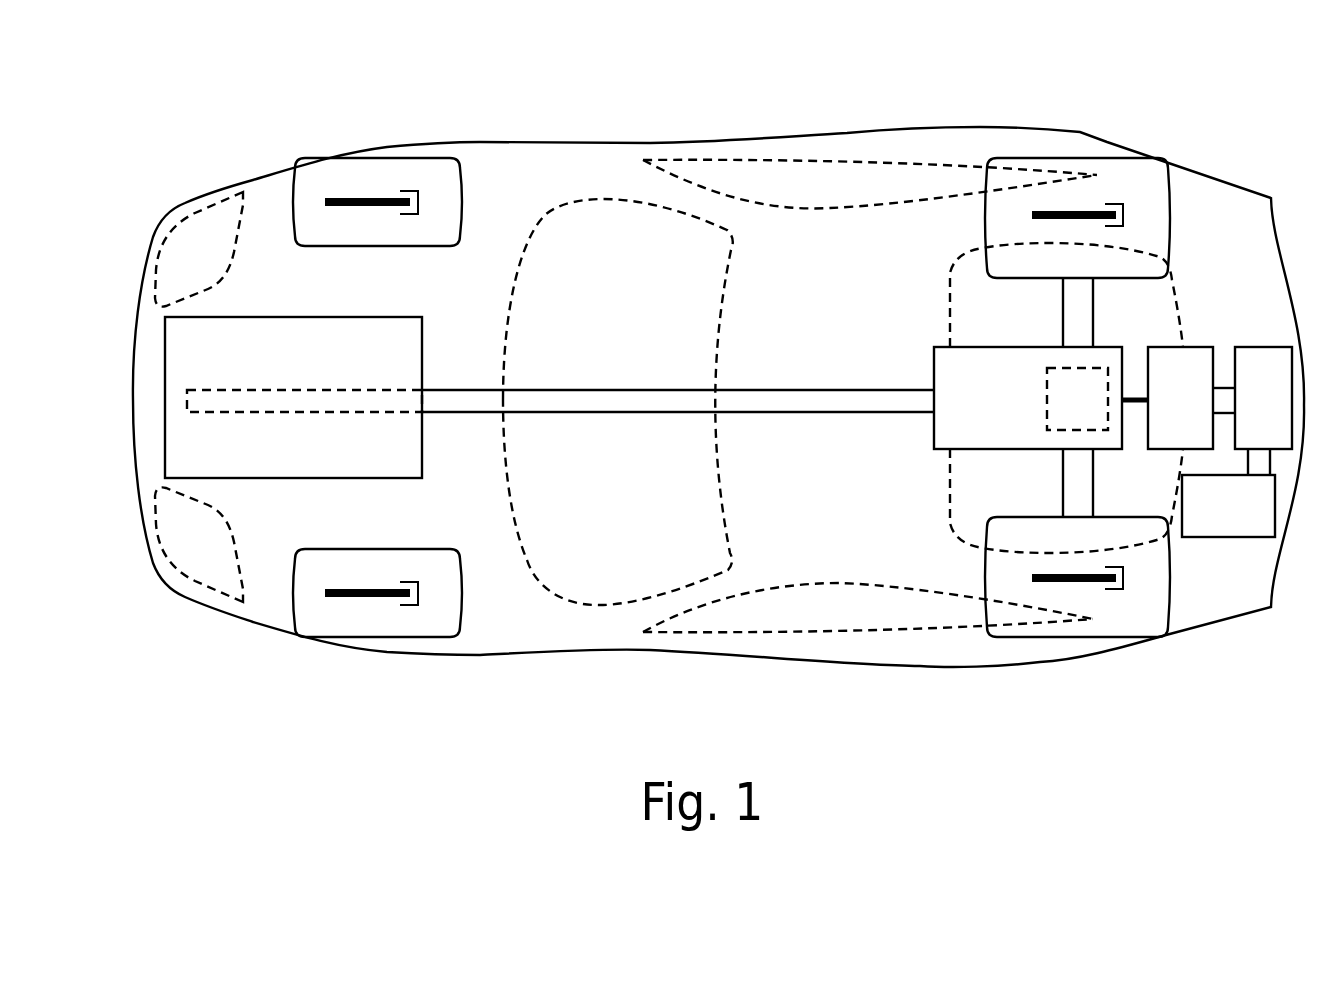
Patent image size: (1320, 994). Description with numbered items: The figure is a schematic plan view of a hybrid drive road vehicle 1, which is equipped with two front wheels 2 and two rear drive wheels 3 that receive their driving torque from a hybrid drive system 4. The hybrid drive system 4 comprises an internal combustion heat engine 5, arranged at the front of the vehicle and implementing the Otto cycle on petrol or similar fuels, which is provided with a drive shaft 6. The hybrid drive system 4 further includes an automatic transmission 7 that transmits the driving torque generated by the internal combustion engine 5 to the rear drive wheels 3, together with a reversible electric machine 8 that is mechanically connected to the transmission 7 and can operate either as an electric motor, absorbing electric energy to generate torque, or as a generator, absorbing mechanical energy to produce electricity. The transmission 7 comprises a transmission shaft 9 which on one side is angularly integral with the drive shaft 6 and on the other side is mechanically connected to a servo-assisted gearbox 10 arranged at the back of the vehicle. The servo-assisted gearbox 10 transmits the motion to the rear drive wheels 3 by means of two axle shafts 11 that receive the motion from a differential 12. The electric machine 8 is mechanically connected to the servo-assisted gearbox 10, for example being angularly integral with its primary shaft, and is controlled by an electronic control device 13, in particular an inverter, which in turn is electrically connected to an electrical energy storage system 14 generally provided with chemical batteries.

The hybrid drive road vehicle 1 is at (702, 436).
The front wheels 2 is at (315, 178).
The rear drive wheels 3 is at (1153, 175).
The hybrid drive system 4 is at (214, 169).
The internal combustion heat engine 5 is at (173, 343).
The drive shaft 6 is at (280, 398).
The automatic transmission 7 is at (747, 124).
The electric machine 8 is at (1167, 398).
The transmission shaft 9 is at (766, 403).
The servo-assisted gearbox 10 is at (1028, 398).
The axle shafts 11 is at (1075, 303).
The differential 12 is at (1077, 399).
The electronic control device 13 is at (1252, 398).
The electrical energy storage system 14 is at (1228, 493).